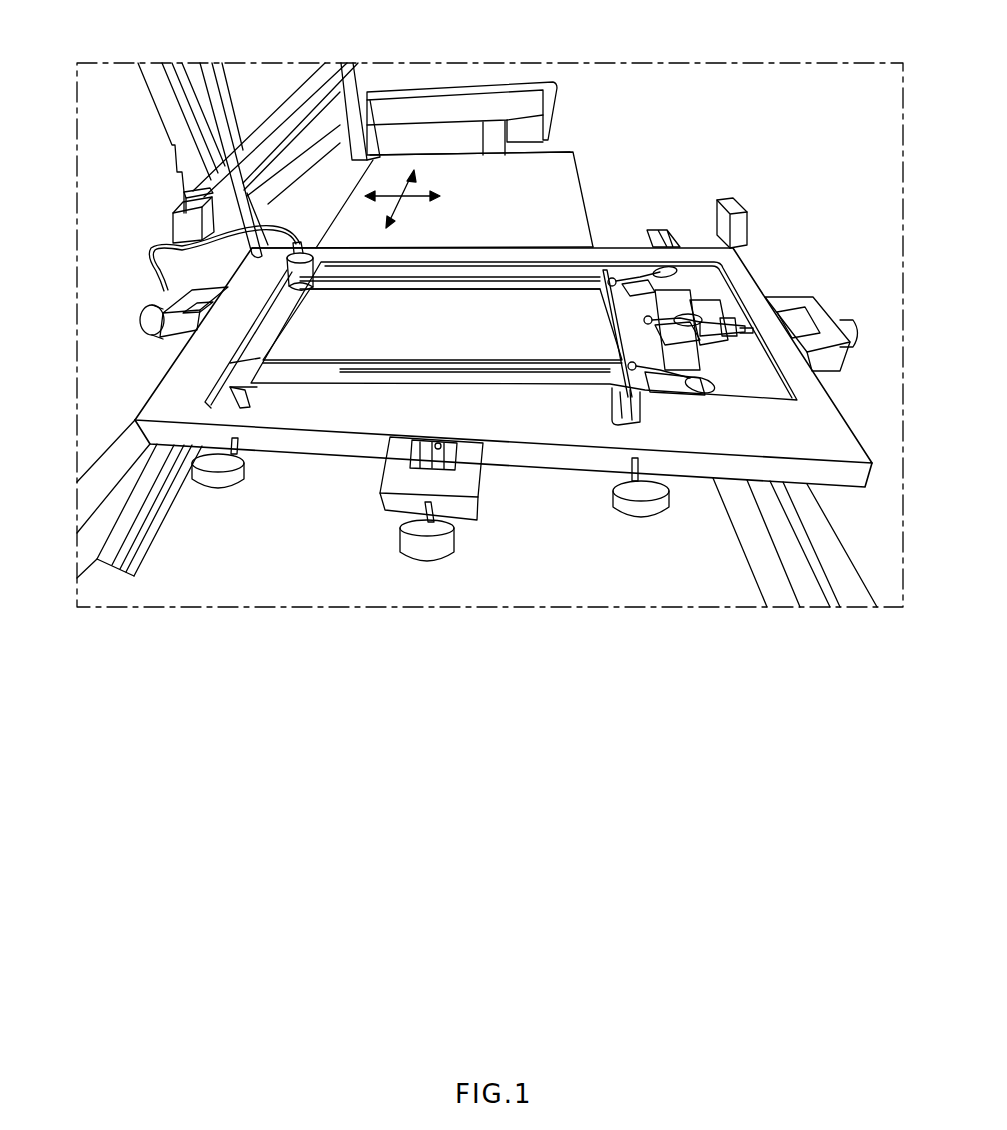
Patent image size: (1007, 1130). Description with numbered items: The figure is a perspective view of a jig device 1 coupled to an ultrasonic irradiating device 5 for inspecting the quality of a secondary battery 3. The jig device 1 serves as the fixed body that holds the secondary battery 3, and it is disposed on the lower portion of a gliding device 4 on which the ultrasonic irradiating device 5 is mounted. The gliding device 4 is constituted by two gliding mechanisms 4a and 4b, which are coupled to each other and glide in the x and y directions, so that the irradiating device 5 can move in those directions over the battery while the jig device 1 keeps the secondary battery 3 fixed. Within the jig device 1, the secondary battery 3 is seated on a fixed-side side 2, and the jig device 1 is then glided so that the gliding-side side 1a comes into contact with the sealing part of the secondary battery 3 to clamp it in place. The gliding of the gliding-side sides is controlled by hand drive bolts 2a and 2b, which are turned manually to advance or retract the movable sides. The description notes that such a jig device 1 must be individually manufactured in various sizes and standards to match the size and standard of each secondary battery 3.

The jig device 1 is at (710, 423).
The gliding-side side 1a is at (327, 373).
The fixed-side side 2 is at (538, 280).
The hand drive bolt 2a is at (425, 557).
The hand drive bolt 2b is at (862, 326).
The secondary battery 3 is at (540, 337).
The gliding device 4 is at (106, 158).
The gliding mechanism 4a is at (288, 103).
The gliding mechanism 4b is at (435, 107).
The ultrasonic irradiating device 5 is at (300, 278).